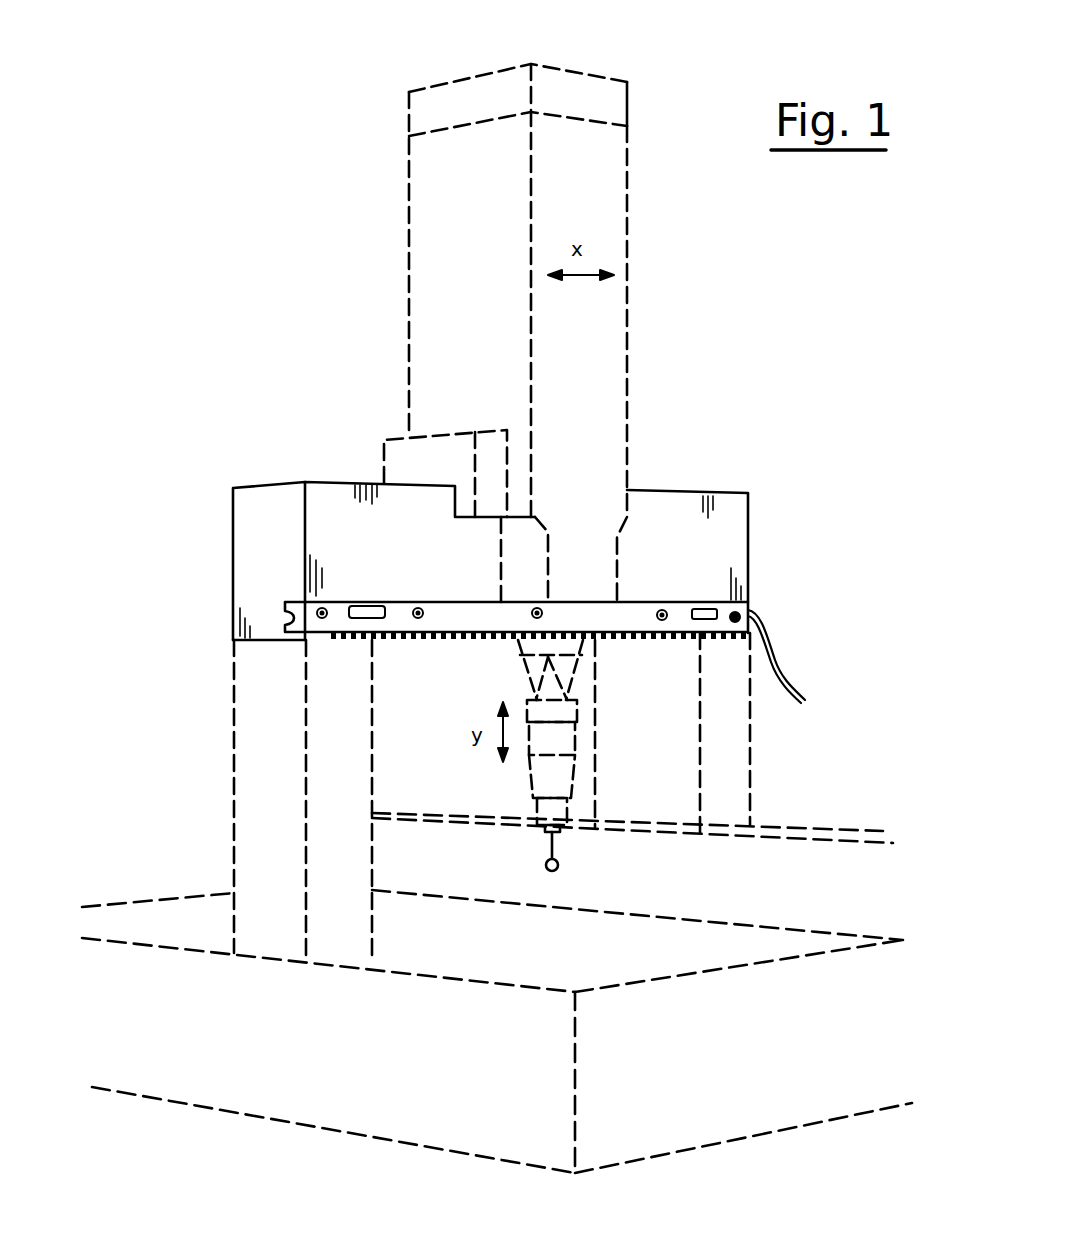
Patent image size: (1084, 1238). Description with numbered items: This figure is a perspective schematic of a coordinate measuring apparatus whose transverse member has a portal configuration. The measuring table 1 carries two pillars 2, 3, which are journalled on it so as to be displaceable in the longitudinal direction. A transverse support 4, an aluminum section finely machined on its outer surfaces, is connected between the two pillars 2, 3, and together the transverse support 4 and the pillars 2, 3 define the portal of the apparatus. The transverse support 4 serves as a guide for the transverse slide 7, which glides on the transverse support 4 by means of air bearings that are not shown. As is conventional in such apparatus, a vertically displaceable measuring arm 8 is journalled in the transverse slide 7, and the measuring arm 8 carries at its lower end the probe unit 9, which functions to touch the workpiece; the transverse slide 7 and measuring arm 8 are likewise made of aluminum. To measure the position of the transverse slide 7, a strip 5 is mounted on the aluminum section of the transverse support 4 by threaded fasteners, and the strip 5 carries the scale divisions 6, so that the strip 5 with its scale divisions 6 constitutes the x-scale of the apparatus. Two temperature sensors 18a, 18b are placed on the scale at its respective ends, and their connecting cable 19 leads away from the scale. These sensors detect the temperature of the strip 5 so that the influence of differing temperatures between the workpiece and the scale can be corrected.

The measuring table 1 is at (145, 893).
The pillar 2 is at (751, 768).
The pillar 3 is at (234, 737).
The transverse support 4 is at (270, 486).
The strip 5 is at (420, 636).
The scale divisions 6 is at (660, 637).
The transverse slide 7 is at (409, 203).
The measuring arm 8 is at (577, 640).
The probe unit 9 is at (556, 812).
The temperature sensor 18a is at (362, 604).
The temperature sensor 18b is at (704, 607).
The connecting cable 19 is at (780, 668).